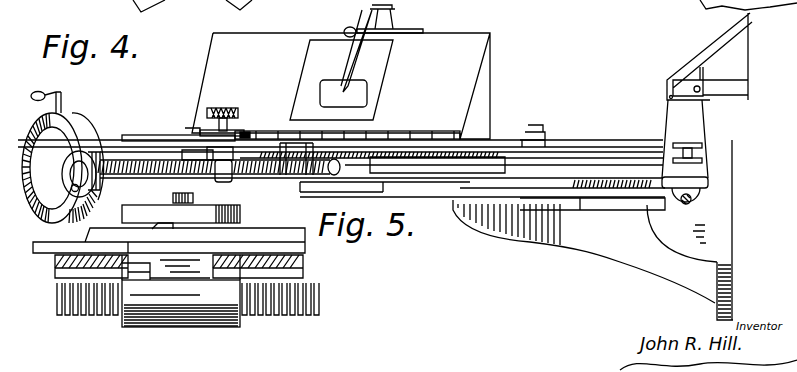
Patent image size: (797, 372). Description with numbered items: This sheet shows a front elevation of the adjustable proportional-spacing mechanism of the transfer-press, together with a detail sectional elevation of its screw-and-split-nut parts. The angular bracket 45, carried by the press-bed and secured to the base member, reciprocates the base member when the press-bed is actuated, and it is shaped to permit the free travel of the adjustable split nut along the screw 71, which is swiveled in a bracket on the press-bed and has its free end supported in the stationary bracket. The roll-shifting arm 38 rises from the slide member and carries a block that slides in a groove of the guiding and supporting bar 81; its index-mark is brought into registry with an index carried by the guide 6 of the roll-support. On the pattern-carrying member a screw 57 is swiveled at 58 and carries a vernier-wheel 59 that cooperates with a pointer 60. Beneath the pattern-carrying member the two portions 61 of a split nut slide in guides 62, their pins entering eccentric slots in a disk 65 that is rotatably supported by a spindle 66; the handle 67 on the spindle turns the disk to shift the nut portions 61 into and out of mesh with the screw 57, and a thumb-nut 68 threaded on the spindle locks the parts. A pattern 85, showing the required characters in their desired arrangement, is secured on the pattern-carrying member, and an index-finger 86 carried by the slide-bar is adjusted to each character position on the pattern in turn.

In FIG. 4, the vernier-wheel 59 is at (58, 112).
In FIG. 4, the pointer 60 is at (78, 124).
In FIG. 4, the swivel 58 is at (78, 187).
In FIG. 4, the screw 57 is at (153, 168).
In FIG. 4, the thumb-nut 68 is at (182, 133).
In FIG. 4, the handle 67 is at (240, 102).
In FIG. 4, the spindle 66 is at (199, 129).
In FIG. 4, the pattern 85 is at (370, 90).
In FIG. 4, the index-finger 86 is at (353, 60).
In FIG. 4, the disk 65 is at (190, 250).
In FIG. 4, the guide of the roll-support 6 is at (40, 244).
In FIG. 4, the guides 62 is at (56, 265).
In FIG. 4, the split nut portions 61 is at (213, 302).
In FIG. 5, the roll-shifting arm 38 is at (703, 116).
In FIG. 5, the guiding and supporting bar 81 is at (710, 184).
In FIG. 5, the screw 71 is at (692, 201).
In FIG. 5, the angular bracket 45 is at (668, 268).